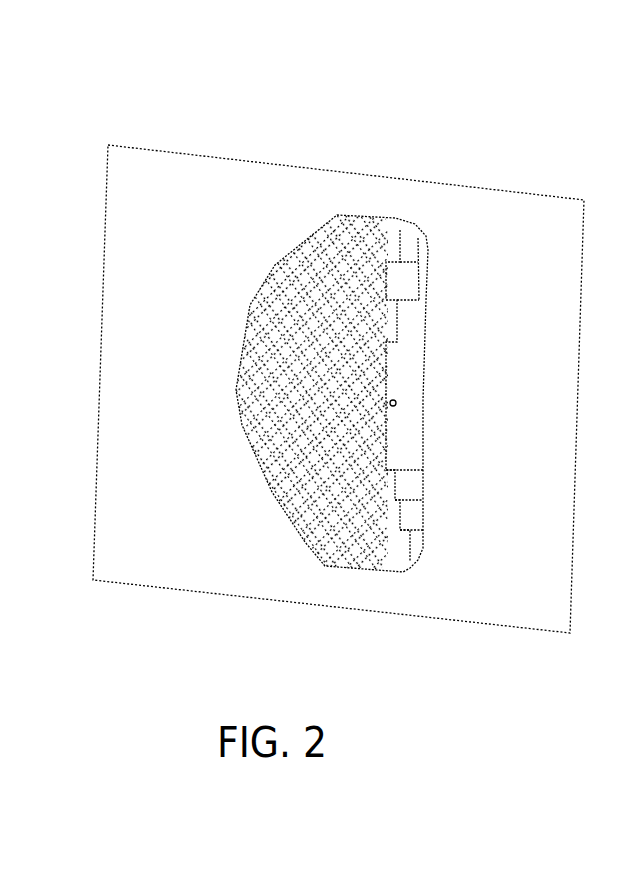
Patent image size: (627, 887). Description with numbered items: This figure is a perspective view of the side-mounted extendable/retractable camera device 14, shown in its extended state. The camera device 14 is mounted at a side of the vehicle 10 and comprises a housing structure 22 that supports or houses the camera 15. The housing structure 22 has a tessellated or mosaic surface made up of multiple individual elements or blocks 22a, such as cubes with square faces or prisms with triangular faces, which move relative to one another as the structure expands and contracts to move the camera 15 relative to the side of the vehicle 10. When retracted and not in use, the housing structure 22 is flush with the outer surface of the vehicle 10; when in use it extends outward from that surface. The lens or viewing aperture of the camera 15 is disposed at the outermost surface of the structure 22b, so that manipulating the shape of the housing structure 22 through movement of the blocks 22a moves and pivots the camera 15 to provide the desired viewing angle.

The vehicle 10 is at (155, 178).
The camera device 14 is at (414, 190).
The housing structure 22 is at (212, 321).
The individual elements or blocks 22a is at (287, 475).
The outermost surface of the structure 22b is at (417, 342).
The camera 15 is at (400, 406).